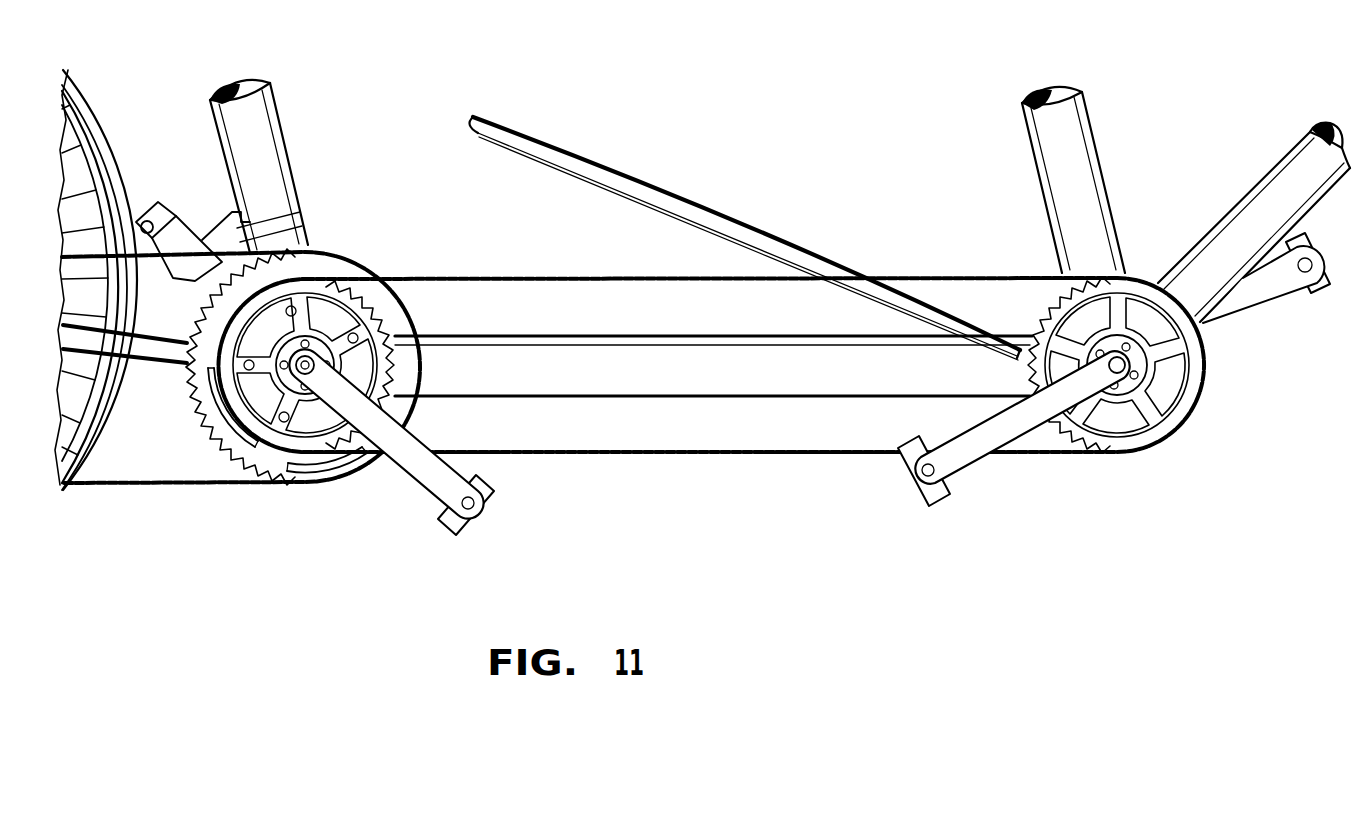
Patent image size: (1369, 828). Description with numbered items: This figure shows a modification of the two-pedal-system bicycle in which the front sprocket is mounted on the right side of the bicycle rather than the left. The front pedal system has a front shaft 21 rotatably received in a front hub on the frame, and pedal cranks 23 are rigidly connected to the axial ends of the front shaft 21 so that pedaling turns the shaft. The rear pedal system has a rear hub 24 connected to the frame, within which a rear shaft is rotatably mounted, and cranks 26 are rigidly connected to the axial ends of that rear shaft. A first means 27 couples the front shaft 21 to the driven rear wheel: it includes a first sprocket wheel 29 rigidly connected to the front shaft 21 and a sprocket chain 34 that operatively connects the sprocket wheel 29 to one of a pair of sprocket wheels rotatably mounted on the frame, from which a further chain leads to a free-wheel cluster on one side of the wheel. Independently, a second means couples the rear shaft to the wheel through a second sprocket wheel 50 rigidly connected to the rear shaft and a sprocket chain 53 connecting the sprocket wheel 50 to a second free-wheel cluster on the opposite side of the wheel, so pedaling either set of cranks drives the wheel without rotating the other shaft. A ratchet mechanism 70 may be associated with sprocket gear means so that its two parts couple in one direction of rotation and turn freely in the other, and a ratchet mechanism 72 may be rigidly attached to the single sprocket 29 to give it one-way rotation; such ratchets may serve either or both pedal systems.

The front shaft 21 is at (1122, 366).
The pedal cranks 23 is at (967, 455).
The rear hub 24 is at (313, 357).
The cranks 26 is at (432, 478).
The first means 27 is at (921, 274).
The first sprocket wheel 29 is at (1185, 410).
The sprocket chain 34 is at (700, 454).
The second sprocket wheel 50 is at (292, 468).
The sprocket chain 53 is at (203, 486).
The ratchet mechanism 70 is at (290, 368).
The ratchet mechanism 72 is at (1120, 330).